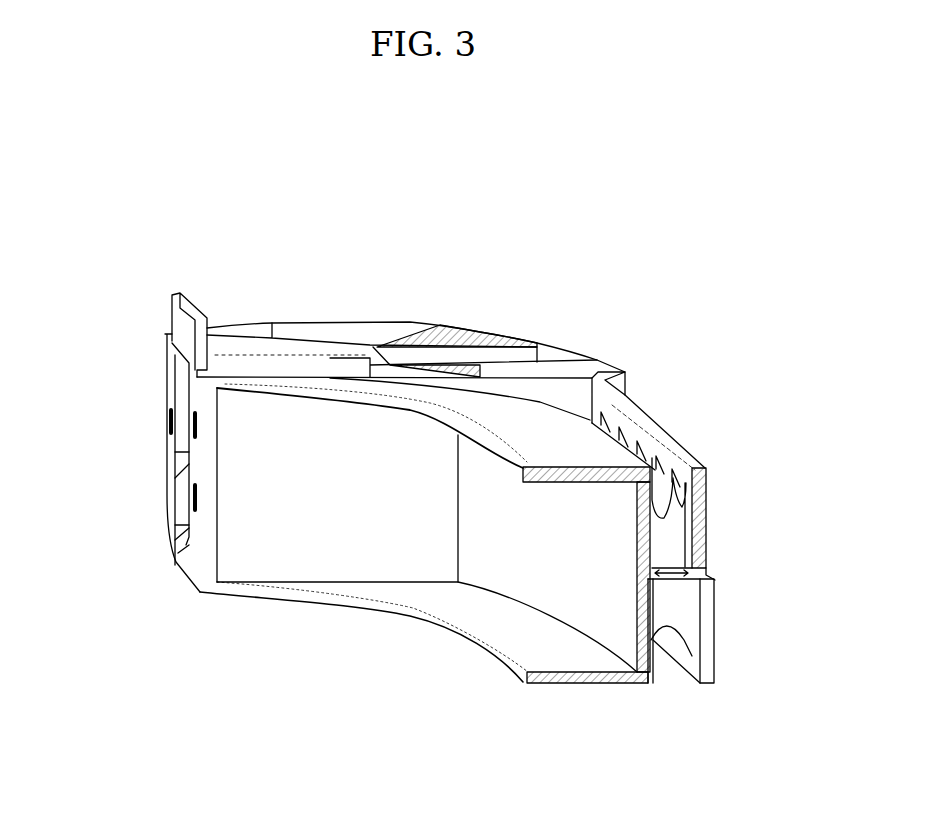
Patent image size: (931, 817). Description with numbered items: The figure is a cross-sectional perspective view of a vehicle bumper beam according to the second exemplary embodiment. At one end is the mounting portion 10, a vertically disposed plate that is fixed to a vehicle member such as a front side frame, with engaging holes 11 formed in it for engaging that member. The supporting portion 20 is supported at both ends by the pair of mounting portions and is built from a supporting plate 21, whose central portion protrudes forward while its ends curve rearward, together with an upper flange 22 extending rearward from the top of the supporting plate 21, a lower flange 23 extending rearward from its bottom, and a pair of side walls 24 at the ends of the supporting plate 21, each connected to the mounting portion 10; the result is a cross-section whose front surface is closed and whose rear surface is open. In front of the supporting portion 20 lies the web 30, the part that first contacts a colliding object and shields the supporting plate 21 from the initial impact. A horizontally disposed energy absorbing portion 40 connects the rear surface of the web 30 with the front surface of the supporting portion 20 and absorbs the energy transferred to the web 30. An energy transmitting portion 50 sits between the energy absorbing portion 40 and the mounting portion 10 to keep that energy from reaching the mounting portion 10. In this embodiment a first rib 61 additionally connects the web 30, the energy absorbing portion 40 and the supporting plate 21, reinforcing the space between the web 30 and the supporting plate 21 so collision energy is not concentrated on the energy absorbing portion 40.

The mounting portion 10 is at (183, 562).
The engaging holes 11 is at (168, 421).
The supporting portion 20 is at (425, 571).
The supporting plate 21 is at (488, 518).
The upper flange 22 is at (324, 396).
The lower flange 23 is at (550, 651).
The side walls 24 is at (253, 497).
The web 30 is at (707, 508).
The energy absorbing portion 40 is at (669, 582).
The energy transmitting portion 50 is at (323, 352).
The first rib 61 is at (672, 540).